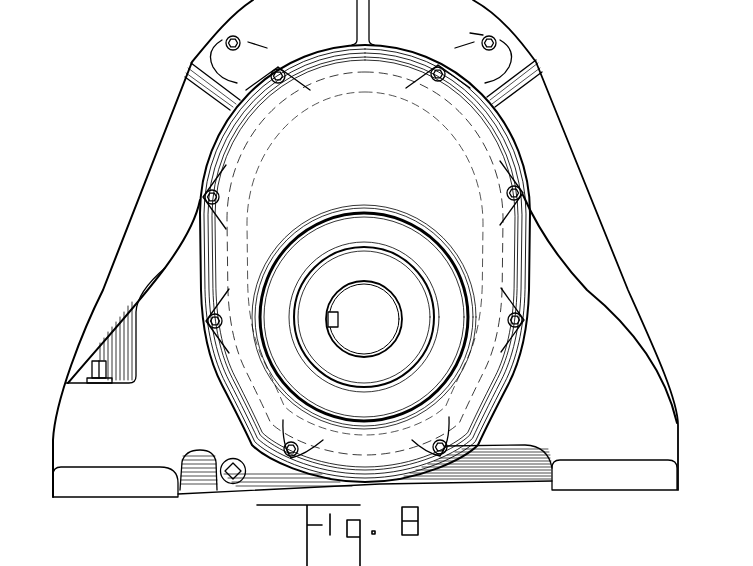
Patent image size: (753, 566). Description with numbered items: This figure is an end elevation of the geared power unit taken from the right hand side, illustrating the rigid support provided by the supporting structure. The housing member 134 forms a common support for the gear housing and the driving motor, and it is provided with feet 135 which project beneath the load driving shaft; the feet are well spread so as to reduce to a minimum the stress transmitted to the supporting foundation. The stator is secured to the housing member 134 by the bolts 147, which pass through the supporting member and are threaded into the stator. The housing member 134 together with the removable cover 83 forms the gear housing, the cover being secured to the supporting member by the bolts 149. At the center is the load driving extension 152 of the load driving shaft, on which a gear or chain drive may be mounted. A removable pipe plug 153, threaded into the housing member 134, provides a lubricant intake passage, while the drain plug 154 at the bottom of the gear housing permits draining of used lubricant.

The removable cover 83 is at (516, 282).
The housing member 134 is at (160, 134).
The feet 135 is at (80, 498).
The bolts 147 is at (242, 40).
The bolts 149 is at (201, 200).
The load driving extension 152 is at (369, 270).
The removable pipe plug 153 is at (92, 368).
The drain plug 154 is at (228, 483).